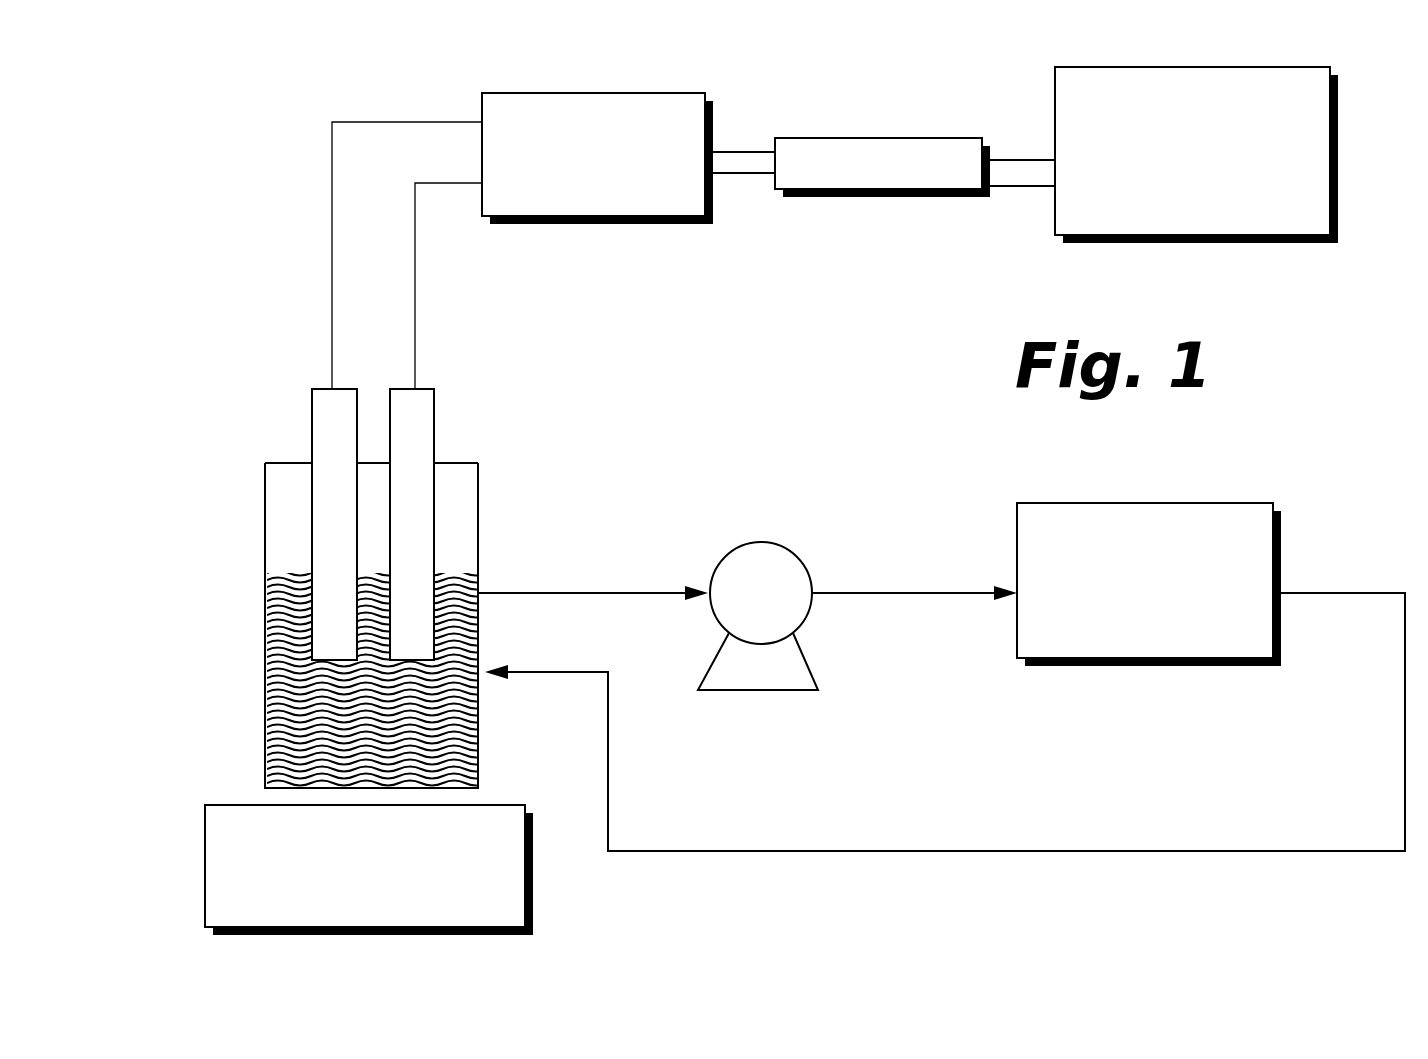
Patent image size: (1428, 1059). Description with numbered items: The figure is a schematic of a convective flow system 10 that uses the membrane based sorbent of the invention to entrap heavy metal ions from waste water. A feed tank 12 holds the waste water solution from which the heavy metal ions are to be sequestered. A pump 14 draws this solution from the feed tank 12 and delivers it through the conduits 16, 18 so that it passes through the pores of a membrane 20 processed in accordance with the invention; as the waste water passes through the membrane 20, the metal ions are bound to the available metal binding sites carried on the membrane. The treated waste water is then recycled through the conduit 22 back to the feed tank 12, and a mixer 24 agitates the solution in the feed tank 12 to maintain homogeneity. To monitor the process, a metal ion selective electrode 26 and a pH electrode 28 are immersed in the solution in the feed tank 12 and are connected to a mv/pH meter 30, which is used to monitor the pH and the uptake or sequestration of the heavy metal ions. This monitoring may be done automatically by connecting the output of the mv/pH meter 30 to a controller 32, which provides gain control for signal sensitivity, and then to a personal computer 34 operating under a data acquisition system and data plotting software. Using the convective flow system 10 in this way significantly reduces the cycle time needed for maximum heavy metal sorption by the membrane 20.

The convective flow system 10 is at (270, 208).
The feed tank 12 is at (479, 502).
The pump 14 is at (772, 543).
The conduit 16 is at (595, 590).
The conduit 18 is at (880, 595).
The membrane 20 is at (1258, 547).
The conduit 22 is at (1190, 851).
The mixer 24 is at (512, 893).
The metal ion selective electrode 26 is at (338, 435).
The pH electrode 28 is at (407, 435).
The mv/pH meter 30 is at (675, 112).
The controller 32 is at (863, 145).
The personal computer 34 is at (1055, 195).